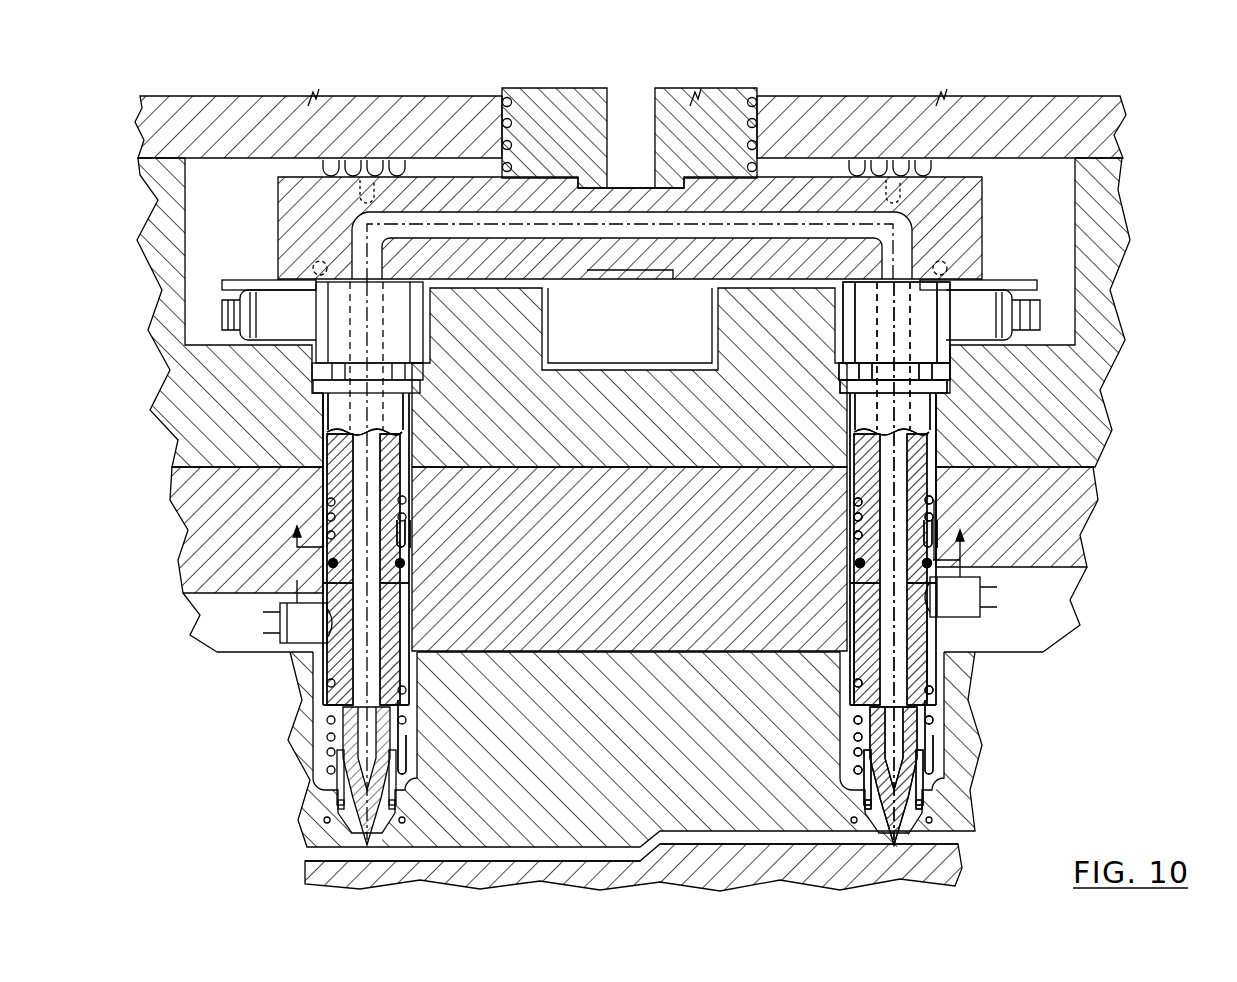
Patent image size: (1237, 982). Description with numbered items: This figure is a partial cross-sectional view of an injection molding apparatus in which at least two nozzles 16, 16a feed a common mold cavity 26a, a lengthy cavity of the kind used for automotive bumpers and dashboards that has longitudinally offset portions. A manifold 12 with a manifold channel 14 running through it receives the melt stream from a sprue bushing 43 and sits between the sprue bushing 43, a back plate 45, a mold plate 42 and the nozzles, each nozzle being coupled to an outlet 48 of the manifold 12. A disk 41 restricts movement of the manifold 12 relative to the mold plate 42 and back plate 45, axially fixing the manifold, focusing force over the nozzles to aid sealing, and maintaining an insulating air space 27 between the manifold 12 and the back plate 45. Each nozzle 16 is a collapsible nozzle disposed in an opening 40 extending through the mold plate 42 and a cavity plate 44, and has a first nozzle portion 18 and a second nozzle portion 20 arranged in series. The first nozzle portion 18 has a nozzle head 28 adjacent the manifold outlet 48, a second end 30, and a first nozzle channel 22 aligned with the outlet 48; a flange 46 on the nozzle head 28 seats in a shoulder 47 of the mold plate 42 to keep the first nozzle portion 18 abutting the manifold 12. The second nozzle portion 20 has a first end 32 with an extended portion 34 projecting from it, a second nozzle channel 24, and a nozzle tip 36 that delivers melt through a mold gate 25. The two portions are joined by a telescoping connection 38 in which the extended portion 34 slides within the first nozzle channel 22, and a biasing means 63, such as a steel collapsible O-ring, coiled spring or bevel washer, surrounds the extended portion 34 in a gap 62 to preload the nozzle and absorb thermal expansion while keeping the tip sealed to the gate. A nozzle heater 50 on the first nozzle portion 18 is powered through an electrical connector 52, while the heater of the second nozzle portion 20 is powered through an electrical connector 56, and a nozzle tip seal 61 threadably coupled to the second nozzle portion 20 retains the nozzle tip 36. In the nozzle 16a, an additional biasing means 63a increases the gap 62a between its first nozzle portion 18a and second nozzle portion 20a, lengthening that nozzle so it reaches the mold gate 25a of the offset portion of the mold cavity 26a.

The manifold 12 is at (968, 216).
The manifold channel 14 is at (793, 220).
The nozzle 16 is at (852, 343).
The nozzle 16a is at (302, 481).
The first nozzle portion 18 is at (931, 468).
The first nozzle portion 18a is at (335, 440).
The second nozzle portion 20 is at (970, 664).
The second nozzle portion 20a is at (395, 612).
The first nozzle channel 22 is at (849, 320).
The second nozzle channel 24 is at (905, 718).
The mold gate 25 is at (935, 838).
The mold gate 25a is at (345, 832).
The mold cavity 26a is at (690, 835).
The air space 27 is at (828, 170).
The nozzle head 28 is at (846, 384).
The second end 30 is at (848, 490).
The first end 32 is at (850, 610).
The extended portion 34 is at (936, 490).
The nozzle tip 36 is at (921, 834).
The telescoping connection 38 is at (858, 560).
The opening 40 is at (842, 580).
The disk 41 is at (950, 168).
The mold plate 42 is at (616, 429).
The sprue bushing 43 is at (712, 160).
The cavity plate 44 is at (610, 559).
The back plate 45 is at (1113, 120).
The flange 46 is at (846, 408).
The shoulder 47 is at (952, 362).
The outlet 48 is at (903, 274).
The nozzle heater 50 is at (943, 505).
The electrical connector 52 is at (1000, 287).
The electrical connector 56 is at (965, 600).
The nozzle tip seal 61 is at (935, 790).
The gap 62 is at (965, 550).
The gap 62a is at (297, 584).
The biasing means 63 is at (856, 546).
The biasing means 63a is at (412, 557).